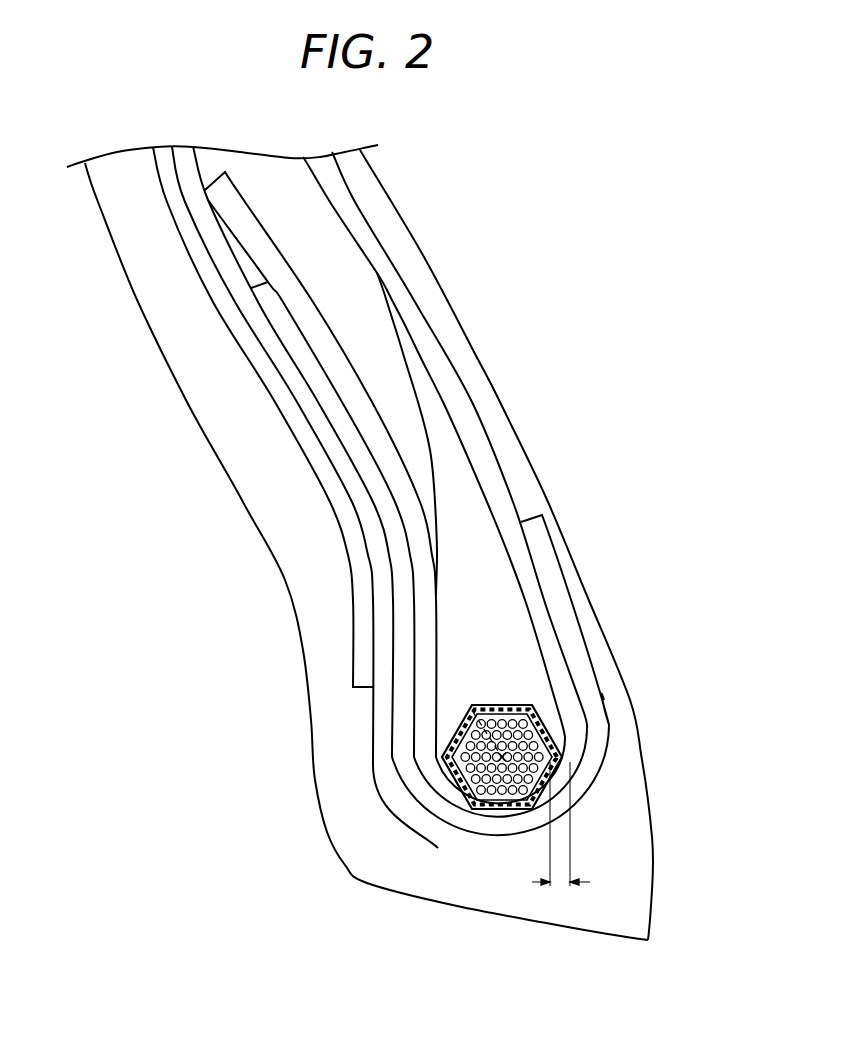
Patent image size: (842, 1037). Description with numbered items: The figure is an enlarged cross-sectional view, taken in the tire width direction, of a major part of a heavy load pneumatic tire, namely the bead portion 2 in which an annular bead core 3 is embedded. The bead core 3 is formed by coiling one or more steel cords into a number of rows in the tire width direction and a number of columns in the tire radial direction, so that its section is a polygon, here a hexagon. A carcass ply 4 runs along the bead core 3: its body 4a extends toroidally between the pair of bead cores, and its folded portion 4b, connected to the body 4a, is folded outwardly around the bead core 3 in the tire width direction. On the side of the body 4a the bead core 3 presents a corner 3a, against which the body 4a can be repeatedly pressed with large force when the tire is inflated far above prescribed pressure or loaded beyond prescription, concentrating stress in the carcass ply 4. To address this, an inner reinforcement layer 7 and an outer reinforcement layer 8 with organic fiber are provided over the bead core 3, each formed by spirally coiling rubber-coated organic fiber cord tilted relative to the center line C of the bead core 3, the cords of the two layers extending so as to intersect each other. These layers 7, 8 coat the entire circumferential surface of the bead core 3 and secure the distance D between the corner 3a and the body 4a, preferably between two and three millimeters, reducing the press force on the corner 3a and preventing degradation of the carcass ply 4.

The bead portion 2 is at (620, 604).
The bead core 3 is at (565, 720).
The corner of the bead core 3a is at (557, 752).
The carcass ply 4 is at (316, 484).
The body of the carcass ply 4a is at (352, 207).
The folded portion of the carcass ply 4b is at (245, 227).
The inner reinforcement layer with organic fiber 7 is at (502, 812).
The outer reinforcement layer with organic fiber 8 is at (510, 805).
The center line of the bead core C is at (475, 708).
The distance between the corner of the bead core and the body of the carcass ply D is at (561, 835).